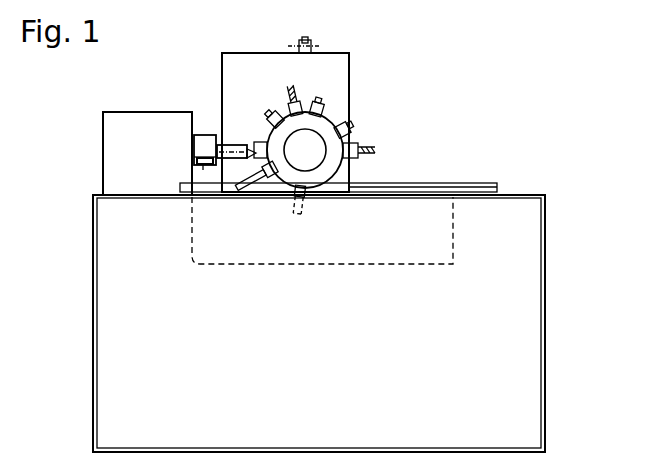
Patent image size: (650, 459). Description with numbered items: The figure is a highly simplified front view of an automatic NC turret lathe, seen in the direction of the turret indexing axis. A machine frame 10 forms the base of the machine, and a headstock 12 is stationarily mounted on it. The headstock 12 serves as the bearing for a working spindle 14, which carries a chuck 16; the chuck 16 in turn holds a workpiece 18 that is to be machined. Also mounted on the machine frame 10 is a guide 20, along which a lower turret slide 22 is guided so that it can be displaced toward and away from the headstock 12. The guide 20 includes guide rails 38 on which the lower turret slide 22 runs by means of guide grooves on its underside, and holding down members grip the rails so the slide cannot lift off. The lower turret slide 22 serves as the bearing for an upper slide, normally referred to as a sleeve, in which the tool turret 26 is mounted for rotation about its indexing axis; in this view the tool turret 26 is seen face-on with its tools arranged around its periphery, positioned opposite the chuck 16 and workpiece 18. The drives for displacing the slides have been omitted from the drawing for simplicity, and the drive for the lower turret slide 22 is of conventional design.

The machine frame 10 is at (553, 268).
The headstock 12 is at (146, 116).
The working spindle 14 is at (205, 178).
The chuck 16 is at (204, 135).
The workpiece 18 is at (233, 146).
The guide 20 is at (430, 170).
The lower turret slide 22 is at (334, 72).
The tool turret 26 is at (325, 127).
The guide rails 38 is at (474, 182).